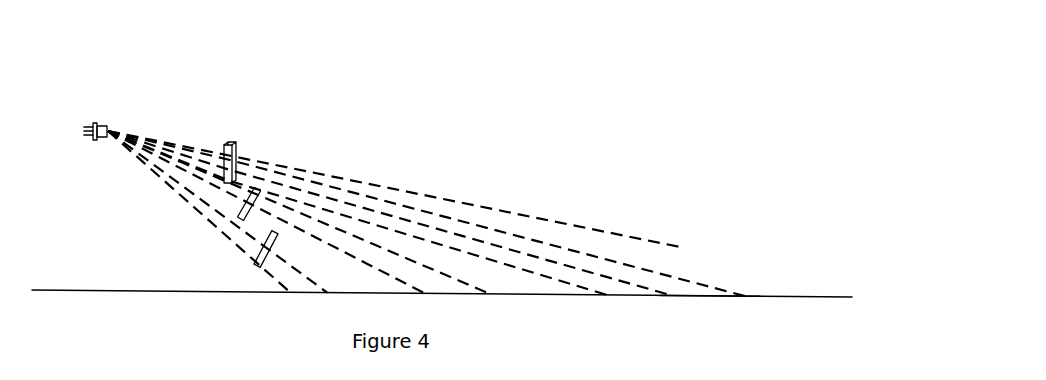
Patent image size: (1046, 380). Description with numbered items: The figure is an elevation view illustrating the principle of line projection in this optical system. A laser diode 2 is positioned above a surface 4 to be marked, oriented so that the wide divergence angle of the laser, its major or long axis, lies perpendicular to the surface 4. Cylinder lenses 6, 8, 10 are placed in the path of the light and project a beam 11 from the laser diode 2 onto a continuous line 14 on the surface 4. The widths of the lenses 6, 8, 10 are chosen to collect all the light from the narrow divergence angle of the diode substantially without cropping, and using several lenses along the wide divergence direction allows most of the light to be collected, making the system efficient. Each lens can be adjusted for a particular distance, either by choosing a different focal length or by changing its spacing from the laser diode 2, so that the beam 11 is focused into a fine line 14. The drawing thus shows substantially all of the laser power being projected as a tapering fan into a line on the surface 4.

The laser diode 2 is at (100, 123).
The surface 4 is at (565, 295).
The cylinder lens 6 is at (225, 147).
The cylinder lens 8 is at (251, 190).
The cylinder lens 10 is at (270, 230).
The beam 11 is at (167, 133).
The continuous line 14 is at (757, 296).